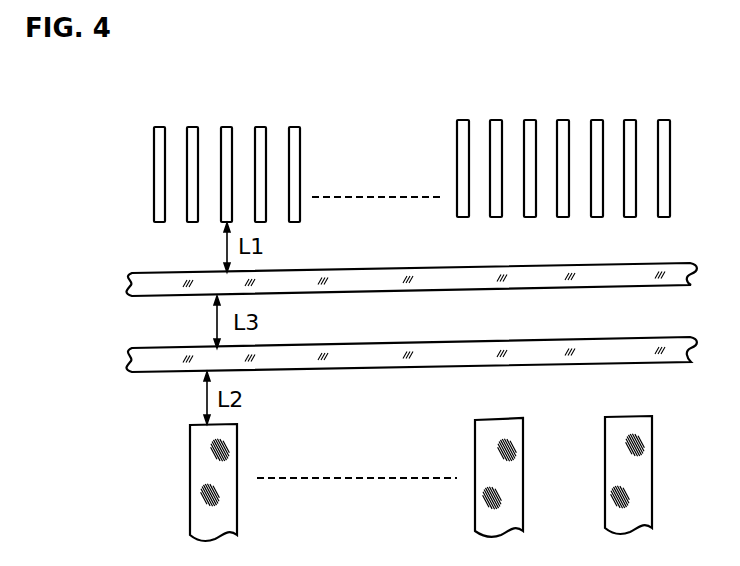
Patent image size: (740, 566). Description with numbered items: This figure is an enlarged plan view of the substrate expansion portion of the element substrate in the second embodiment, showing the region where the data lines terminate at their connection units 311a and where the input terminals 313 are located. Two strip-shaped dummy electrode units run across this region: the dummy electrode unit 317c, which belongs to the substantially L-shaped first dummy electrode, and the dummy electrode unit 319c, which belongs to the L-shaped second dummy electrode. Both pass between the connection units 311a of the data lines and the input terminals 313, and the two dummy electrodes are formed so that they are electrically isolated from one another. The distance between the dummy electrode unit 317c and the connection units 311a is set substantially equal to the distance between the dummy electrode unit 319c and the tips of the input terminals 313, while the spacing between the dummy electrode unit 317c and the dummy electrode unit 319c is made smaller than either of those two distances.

The connection unit of the data line 311a is at (160, 184).
The dummy electrode unit 317c is at (380, 270).
The dummy electrode unit 319c is at (353, 363).
The input terminal 313 is at (196, 470).